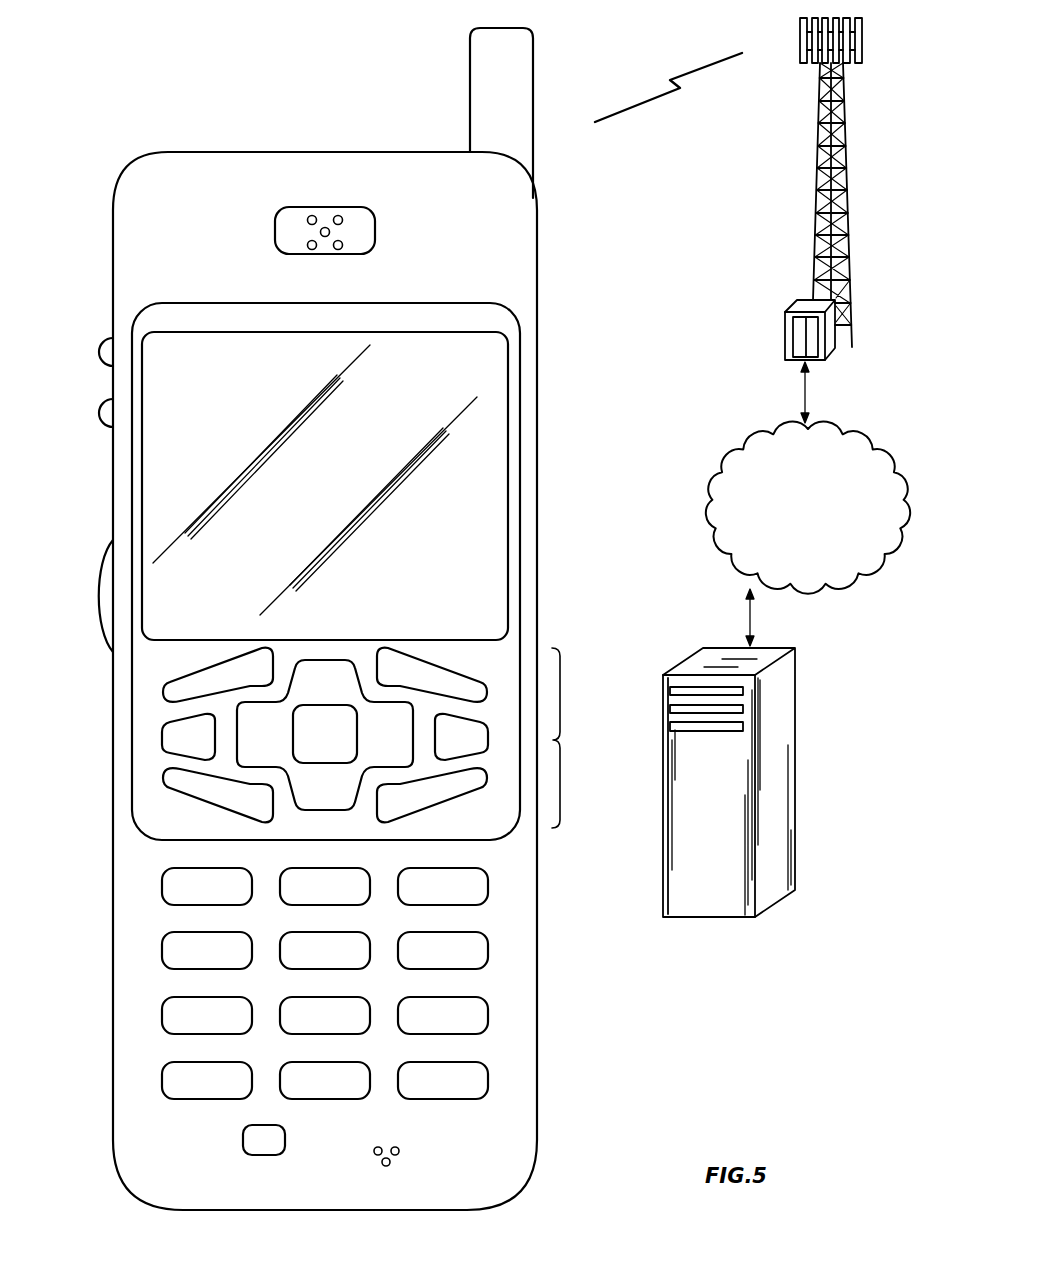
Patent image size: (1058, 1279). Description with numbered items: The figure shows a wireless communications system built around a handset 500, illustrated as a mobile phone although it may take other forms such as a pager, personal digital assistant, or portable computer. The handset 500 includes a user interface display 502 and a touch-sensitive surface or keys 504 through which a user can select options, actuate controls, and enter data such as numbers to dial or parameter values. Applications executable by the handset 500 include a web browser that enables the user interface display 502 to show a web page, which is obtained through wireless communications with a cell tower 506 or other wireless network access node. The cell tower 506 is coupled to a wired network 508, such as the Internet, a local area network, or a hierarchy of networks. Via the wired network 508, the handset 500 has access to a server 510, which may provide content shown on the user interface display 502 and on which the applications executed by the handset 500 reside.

The handset 500 is at (120, 55).
The user interface display 502 is at (510, 380).
The touch-sensitive surface or keys 504 is at (560, 742).
The cell tower 506 is at (820, 158).
The wired network 508 is at (829, 522).
The server 510 is at (730, 919).